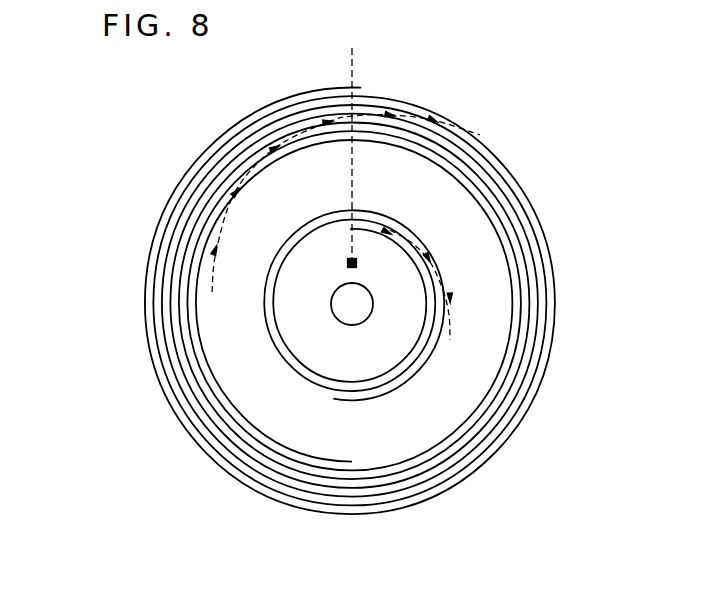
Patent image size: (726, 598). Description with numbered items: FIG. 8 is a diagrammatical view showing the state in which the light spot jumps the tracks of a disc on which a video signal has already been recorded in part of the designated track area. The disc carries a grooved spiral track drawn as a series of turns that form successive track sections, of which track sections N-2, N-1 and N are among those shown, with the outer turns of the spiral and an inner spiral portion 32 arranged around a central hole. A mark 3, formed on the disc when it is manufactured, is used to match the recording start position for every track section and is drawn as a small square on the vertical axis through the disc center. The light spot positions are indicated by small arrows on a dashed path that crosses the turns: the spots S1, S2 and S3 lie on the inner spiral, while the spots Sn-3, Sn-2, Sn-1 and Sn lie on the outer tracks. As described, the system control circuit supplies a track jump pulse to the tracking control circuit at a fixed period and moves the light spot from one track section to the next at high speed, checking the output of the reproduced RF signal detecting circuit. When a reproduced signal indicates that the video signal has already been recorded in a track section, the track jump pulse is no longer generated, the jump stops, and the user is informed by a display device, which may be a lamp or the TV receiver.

The mark 3 is at (347, 263).
The TV receiver 32 is at (343, 305).
The track section N-2 is at (215, 380).
The track section N-1 is at (200, 358).
The track section N is at (185, 338).
The light spot position Sn-3 is at (213, 249).
The light spot position Sn-2 is at (234, 191).
The light spot position Sn-1 is at (274, 147).
The light spot Sn is at (327, 121).
The light spot S1 is at (388, 229).
The light spot S2 is at (429, 256).
The light spot S3 is at (452, 297).